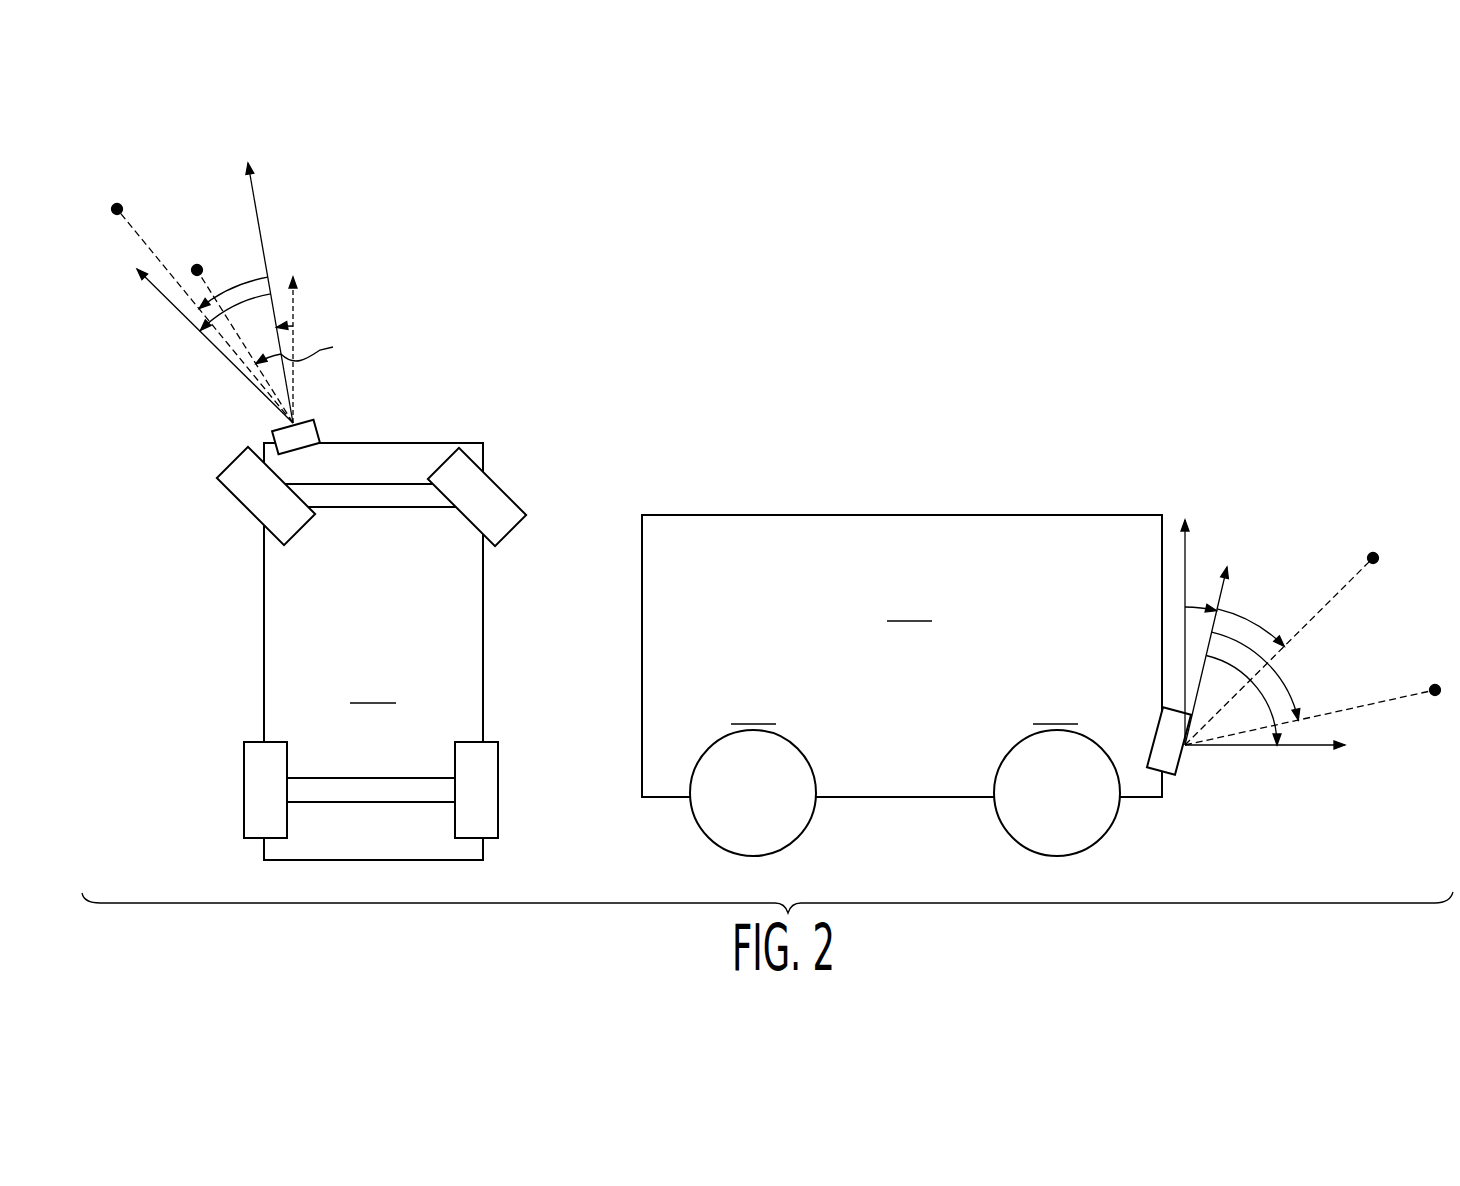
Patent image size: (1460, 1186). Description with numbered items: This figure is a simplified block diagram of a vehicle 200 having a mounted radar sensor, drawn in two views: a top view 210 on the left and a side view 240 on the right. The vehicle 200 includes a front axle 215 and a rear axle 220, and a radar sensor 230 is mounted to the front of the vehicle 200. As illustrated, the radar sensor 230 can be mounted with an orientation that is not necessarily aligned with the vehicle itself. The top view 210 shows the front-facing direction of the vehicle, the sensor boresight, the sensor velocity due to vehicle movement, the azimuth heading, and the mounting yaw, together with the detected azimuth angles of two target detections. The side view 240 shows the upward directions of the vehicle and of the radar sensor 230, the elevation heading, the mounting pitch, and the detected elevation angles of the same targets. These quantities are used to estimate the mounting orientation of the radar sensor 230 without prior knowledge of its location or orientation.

The vehicle 200 is at (263, 608).
The top view 210 is at (259, 433).
The front axle 215 is at (407, 484).
The rear axle 220 is at (420, 778).
The radar sensor 230 is at (316, 428).
The side view 240 is at (1133, 638).